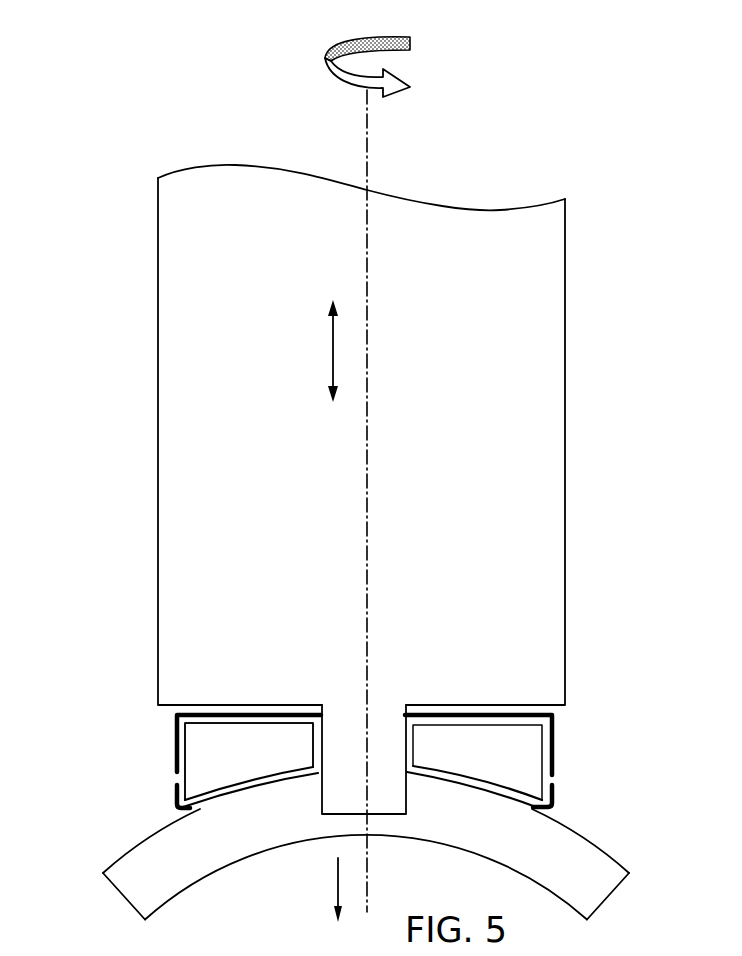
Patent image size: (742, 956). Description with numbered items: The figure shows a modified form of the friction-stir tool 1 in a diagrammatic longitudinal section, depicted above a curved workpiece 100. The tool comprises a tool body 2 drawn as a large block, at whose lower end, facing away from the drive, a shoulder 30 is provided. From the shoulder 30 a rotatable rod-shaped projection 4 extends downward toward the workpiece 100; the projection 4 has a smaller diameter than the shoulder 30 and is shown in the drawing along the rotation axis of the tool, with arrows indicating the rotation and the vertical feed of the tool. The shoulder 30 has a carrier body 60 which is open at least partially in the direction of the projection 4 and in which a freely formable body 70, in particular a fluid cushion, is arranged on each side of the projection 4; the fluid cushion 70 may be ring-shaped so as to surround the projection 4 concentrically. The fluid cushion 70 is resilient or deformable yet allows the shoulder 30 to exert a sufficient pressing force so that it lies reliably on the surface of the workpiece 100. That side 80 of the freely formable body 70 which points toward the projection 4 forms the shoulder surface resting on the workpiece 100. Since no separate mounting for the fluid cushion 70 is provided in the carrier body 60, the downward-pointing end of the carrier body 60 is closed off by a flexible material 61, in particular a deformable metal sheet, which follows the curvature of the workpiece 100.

The friction-stir tool 1 is at (494, 176).
The tool body 2 is at (540, 350).
The rod-shaped projection 4 is at (387, 803).
The shoulder 30 is at (177, 740).
The carrier body 60 is at (555, 722).
The flexible material 61 is at (187, 812).
The freely formable body 70 is at (547, 752).
The side of the freely formable body 80 is at (540, 793).
The workpiece 100 is at (605, 875).